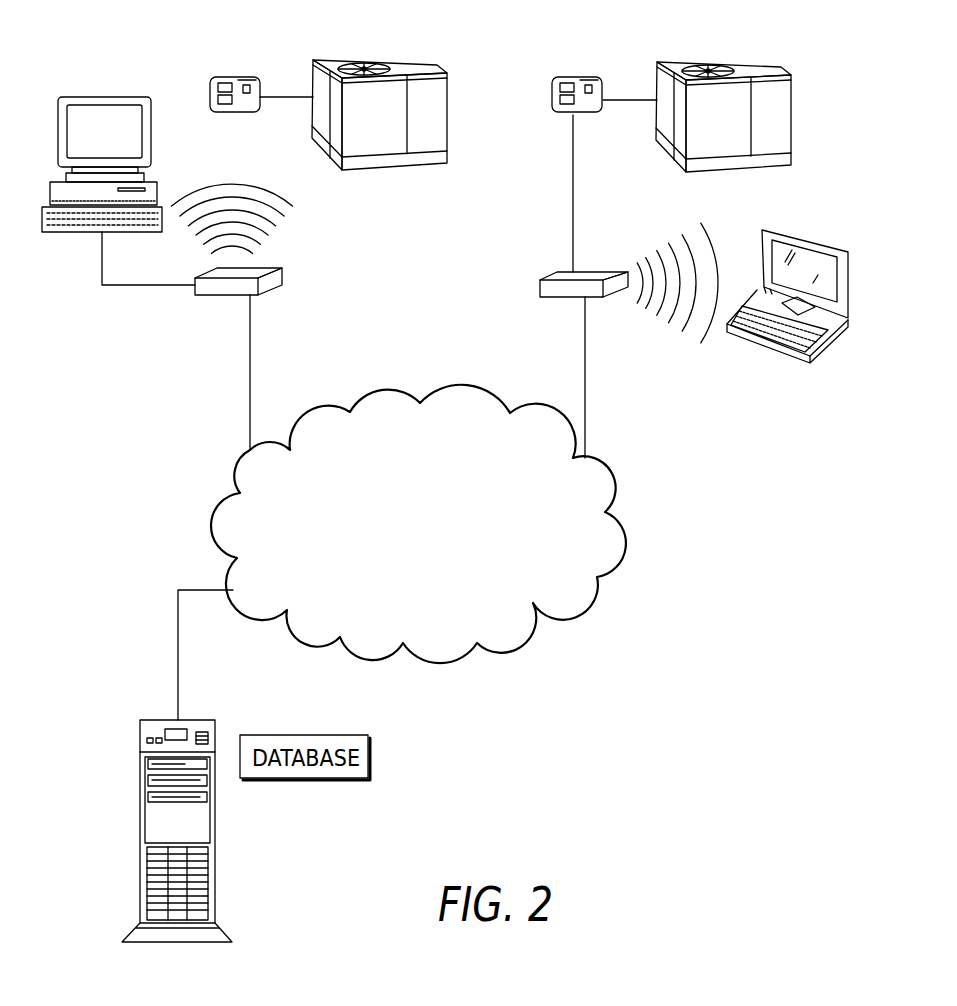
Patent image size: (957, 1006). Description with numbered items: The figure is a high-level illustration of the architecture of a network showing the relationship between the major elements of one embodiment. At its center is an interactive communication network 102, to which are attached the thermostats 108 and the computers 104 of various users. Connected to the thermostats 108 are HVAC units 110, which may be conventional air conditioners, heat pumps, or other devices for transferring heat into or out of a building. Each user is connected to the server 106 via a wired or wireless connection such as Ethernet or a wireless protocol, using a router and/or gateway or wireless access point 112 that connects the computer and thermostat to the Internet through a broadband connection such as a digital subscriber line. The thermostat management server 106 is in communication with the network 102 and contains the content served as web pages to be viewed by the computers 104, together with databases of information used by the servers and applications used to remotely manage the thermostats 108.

The network 102 is at (620, 478).
The computers 104 is at (119, 96).
The server 106 is at (140, 752).
The thermostats 108 is at (242, 74).
The HVAC units 110 is at (402, 67).
The router and/or gateway or wireless access point 112 is at (557, 275).